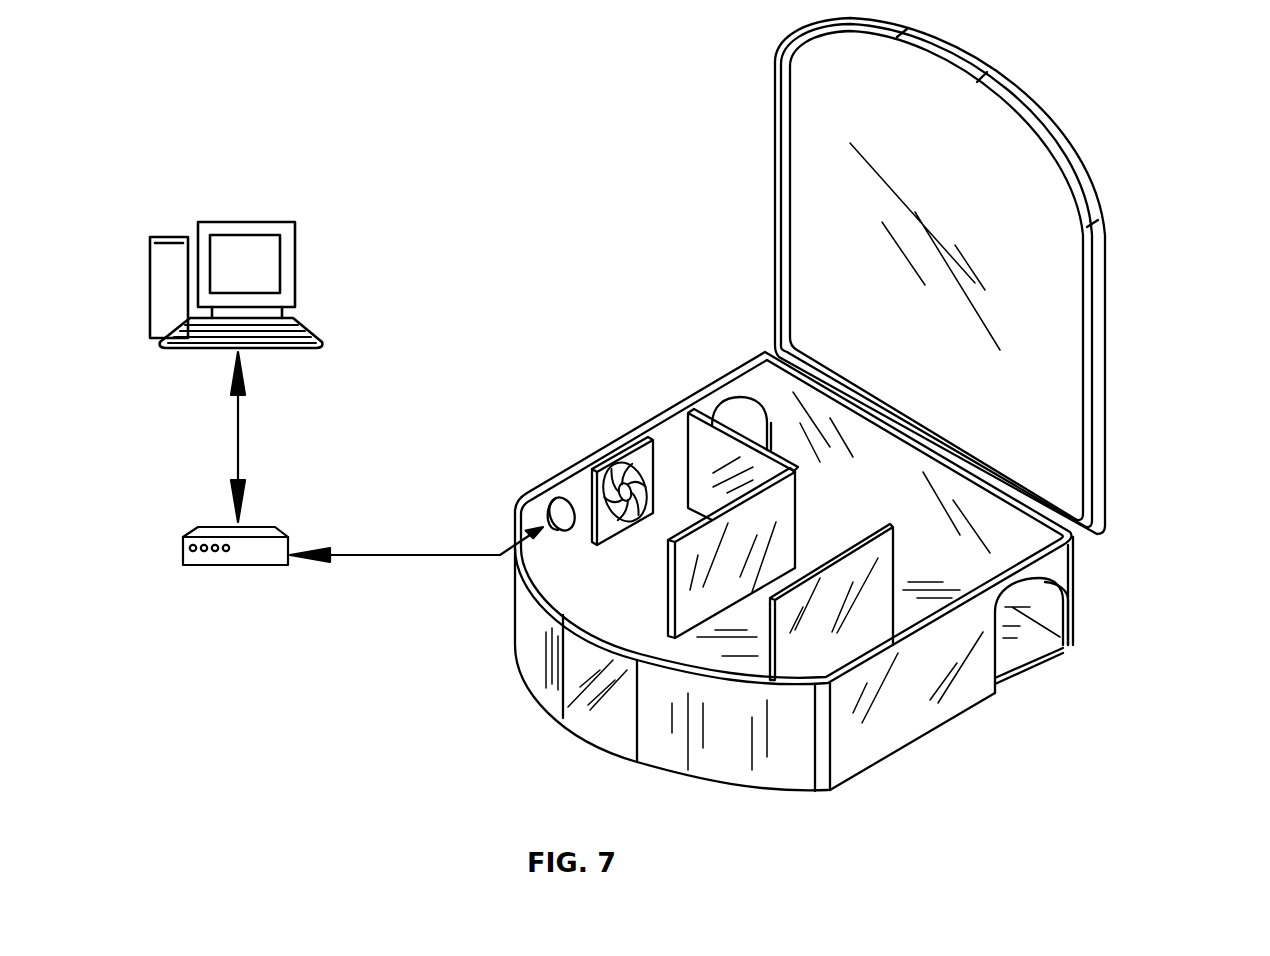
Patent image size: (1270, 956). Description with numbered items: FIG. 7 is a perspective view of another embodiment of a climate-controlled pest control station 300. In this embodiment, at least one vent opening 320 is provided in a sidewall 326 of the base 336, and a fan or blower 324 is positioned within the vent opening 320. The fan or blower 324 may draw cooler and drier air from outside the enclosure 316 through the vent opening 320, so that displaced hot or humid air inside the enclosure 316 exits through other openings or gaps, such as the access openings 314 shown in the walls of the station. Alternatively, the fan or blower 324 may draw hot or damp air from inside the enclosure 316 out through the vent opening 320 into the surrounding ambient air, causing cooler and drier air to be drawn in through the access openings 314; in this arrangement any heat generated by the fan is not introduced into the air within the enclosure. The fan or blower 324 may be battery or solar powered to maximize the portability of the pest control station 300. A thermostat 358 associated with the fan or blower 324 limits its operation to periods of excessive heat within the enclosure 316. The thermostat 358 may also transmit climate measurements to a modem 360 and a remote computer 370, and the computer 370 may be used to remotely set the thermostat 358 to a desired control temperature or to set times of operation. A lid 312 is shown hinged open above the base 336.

The pest control station 300 is at (531, 158).
The lid 312 is at (773, 196).
The access openings 314 is at (730, 405).
The enclosure 316 is at (1078, 560).
The vent opening 320 is at (623, 460).
The fan or blower 324 is at (585, 488).
The sidewall 326 is at (543, 612).
The base 336 is at (905, 738).
The thermostat 358 is at (548, 509).
The modem 360 is at (238, 560).
The remote computer 370 is at (288, 265).